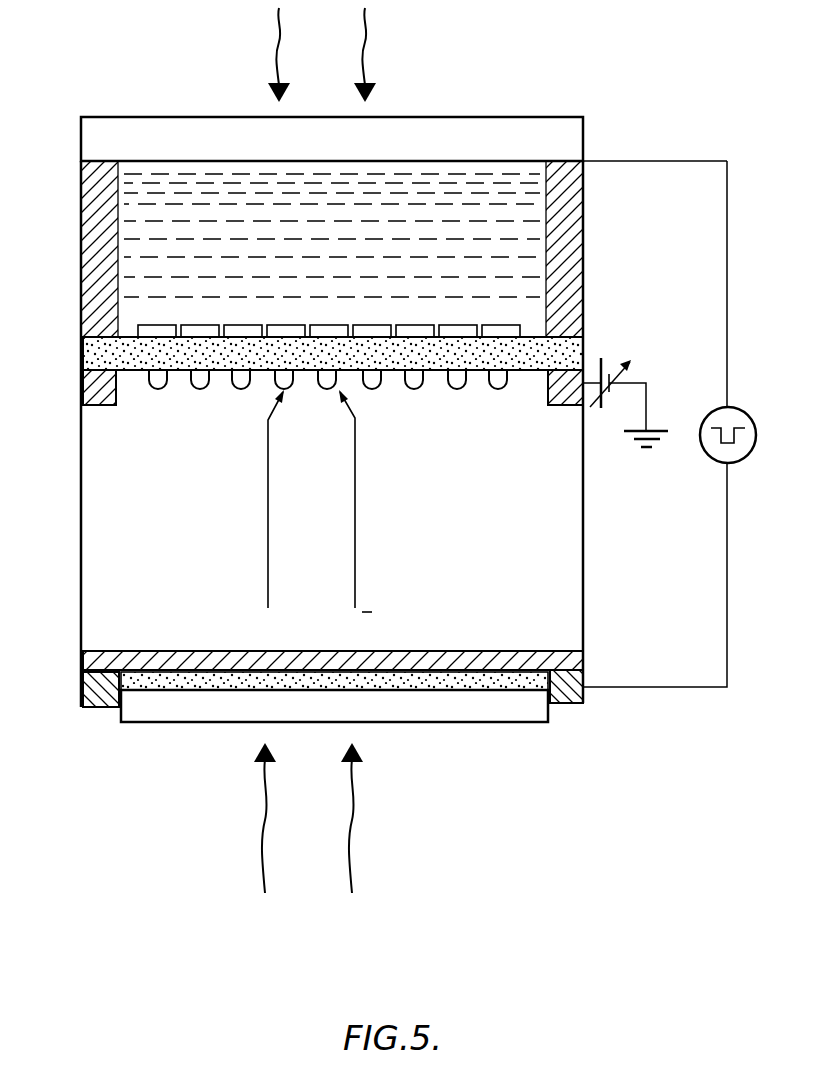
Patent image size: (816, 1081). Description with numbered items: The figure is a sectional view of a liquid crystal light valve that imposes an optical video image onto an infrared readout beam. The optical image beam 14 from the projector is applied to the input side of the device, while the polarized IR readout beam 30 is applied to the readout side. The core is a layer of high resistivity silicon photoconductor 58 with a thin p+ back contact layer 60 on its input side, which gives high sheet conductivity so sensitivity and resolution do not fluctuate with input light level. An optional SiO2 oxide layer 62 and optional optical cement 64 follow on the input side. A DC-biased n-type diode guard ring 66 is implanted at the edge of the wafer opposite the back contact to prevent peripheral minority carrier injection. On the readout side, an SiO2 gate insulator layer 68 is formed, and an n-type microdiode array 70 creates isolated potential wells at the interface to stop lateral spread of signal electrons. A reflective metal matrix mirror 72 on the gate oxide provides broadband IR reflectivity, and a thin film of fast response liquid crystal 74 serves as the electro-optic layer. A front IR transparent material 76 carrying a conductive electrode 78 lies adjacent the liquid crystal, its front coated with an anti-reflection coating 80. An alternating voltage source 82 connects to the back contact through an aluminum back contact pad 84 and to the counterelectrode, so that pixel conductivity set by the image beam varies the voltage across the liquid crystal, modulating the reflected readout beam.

The optical image beam 14 is at (265, 862).
The IR readout beam 30 is at (279, 22).
The silicon photoconductor 58 is at (605, 541).
The p+ back contact layer 60 is at (83, 662).
The SiO2 oxide layer 62 is at (150, 690).
The optical cement 64 is at (197, 722).
The n-type diode guard ring 66 is at (92, 407).
The SiO2 gate insulator layer 68 is at (583, 340).
The n-type microdiode array 70 is at (238, 392).
The reflective metal matrix mirror 72 is at (128, 335).
The liquid crystal 74 is at (137, 183).
The front IR transparent material 76 is at (578, 135).
The conductive electrode 78 is at (397, 165).
The anti-reflection coating 80 is at (472, 117).
The alternating voltage source 82 is at (711, 462).
The aluminum back contact pad 84 is at (568, 704).